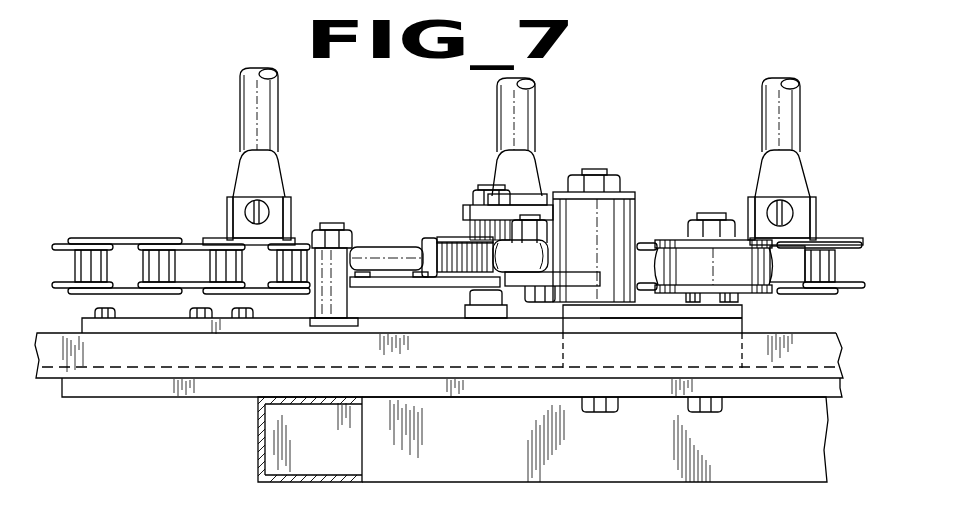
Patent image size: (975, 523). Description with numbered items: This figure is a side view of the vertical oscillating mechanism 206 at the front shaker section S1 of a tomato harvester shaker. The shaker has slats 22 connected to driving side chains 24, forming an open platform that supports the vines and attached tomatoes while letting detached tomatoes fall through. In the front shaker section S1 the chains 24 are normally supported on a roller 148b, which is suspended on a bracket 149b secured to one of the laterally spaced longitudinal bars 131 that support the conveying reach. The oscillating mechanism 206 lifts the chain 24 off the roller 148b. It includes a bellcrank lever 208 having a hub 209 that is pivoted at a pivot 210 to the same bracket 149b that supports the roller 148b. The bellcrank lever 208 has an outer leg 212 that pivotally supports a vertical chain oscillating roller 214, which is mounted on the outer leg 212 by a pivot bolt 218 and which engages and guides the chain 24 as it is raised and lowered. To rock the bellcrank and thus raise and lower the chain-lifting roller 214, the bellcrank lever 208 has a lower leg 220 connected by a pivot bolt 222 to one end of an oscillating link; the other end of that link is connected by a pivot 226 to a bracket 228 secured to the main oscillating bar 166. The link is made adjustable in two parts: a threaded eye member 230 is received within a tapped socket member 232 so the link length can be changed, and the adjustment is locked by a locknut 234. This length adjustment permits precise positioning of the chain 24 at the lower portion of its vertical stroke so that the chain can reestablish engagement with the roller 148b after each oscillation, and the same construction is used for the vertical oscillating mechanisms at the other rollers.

The front shaker section S1 is at (152, 117).
The slats 22 is at (272, 117).
The driving side chains 24 is at (145, 240).
The longitudinal bars 131 is at (153, 385).
The roller 148b is at (672, 241).
The bracket 149b is at (737, 327).
The main oscillating bar 166 is at (178, 359).
The oscillating mechanism 206 is at (651, 129).
The bellcrank lever 208 is at (588, 293).
The hub 209 is at (636, 196).
The pivot 210 is at (590, 173).
The outer leg 212 is at (473, 208).
The chain oscillating roller 214 is at (468, 277).
The pivot bolt 218 is at (488, 186).
The lower leg 220 is at (587, 290).
The pivot bolt 222 is at (525, 268).
The pivot 226 is at (343, 208).
The bracket 228 is at (268, 327).
The threaded eye member 230 is at (447, 237).
The tapped socket member 232 is at (395, 265).
The locknut 234 is at (440, 223).